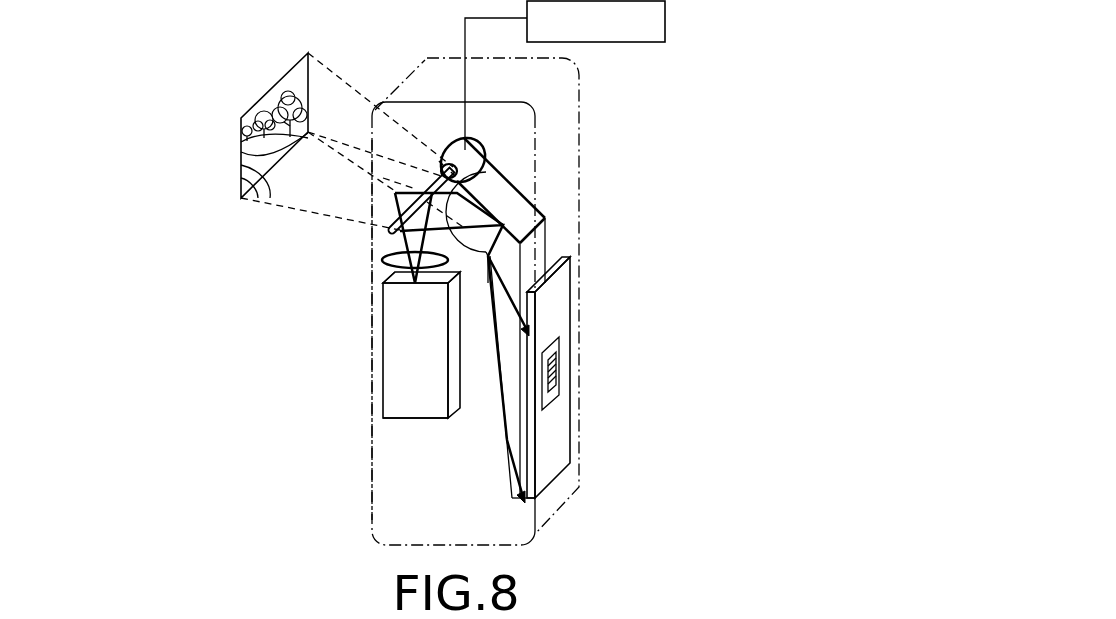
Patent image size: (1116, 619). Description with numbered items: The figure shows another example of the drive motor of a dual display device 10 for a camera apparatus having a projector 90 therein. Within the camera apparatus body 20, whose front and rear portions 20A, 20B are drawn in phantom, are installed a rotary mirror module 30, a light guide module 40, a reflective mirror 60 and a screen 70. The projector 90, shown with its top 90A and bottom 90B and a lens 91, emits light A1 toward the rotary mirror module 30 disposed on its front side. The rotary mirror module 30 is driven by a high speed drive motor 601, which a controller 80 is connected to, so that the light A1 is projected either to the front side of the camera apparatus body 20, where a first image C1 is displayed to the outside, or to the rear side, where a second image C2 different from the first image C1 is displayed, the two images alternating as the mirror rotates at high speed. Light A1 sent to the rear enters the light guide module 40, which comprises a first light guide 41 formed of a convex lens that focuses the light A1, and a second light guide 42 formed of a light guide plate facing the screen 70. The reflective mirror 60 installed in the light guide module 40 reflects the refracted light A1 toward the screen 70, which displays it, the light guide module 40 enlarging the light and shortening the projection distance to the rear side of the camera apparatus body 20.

The head-up display device 10 is at (237, 60).
The first image C1 is at (241, 160).
The camera apparatus body 20 is at (420, 546).
The first housing part 20A is at (372, 468).
The second housing part 20B is at (579, 414).
The rotary mirror module 30 is at (443, 153).
The light guide module 40 is at (580, 335).
The first light guide 41 is at (497, 206).
The second light guide 42 is at (508, 252).
The reflective mirror 60 is at (492, 187).
The high speed drive motor 601 is at (450, 162).
The screen 70 is at (597, 377).
The controller 80 is at (666, 18).
The projector 90 is at (399, 377).
The top surface of light source module 90A is at (386, 281).
The bottom surface of light source module 90B is at (400, 423).
The lens 91 is at (384, 259).
The light A1 is at (522, 289).
The second image C2 is at (560, 373).